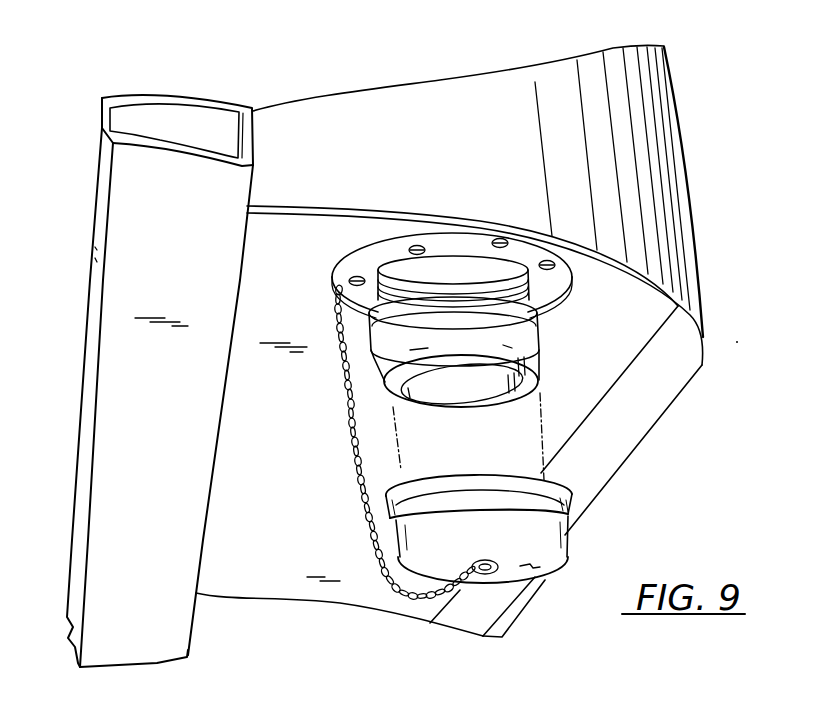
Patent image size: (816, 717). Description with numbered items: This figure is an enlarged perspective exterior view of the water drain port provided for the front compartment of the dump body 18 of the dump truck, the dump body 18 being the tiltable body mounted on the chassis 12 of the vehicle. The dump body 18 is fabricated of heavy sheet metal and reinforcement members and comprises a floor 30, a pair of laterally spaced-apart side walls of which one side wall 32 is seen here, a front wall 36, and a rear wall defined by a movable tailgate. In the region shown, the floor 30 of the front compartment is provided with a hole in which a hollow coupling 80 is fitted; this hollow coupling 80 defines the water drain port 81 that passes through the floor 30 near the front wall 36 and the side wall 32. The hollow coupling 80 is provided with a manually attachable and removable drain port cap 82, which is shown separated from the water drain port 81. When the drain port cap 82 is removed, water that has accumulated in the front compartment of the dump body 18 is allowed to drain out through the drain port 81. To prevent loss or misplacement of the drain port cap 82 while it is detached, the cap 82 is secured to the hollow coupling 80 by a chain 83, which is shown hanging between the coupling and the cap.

The chassis 12 is at (170, 625).
The dump body 18 is at (670, 180).
The floor 30 is at (287, 347).
The side wall 32 is at (622, 466).
The front wall 36 is at (480, 92).
The hollow coupling 80 is at (540, 282).
The water drain port 81 is at (445, 392).
The drain port cap 82 is at (572, 533).
The chain 83 is at (343, 481).